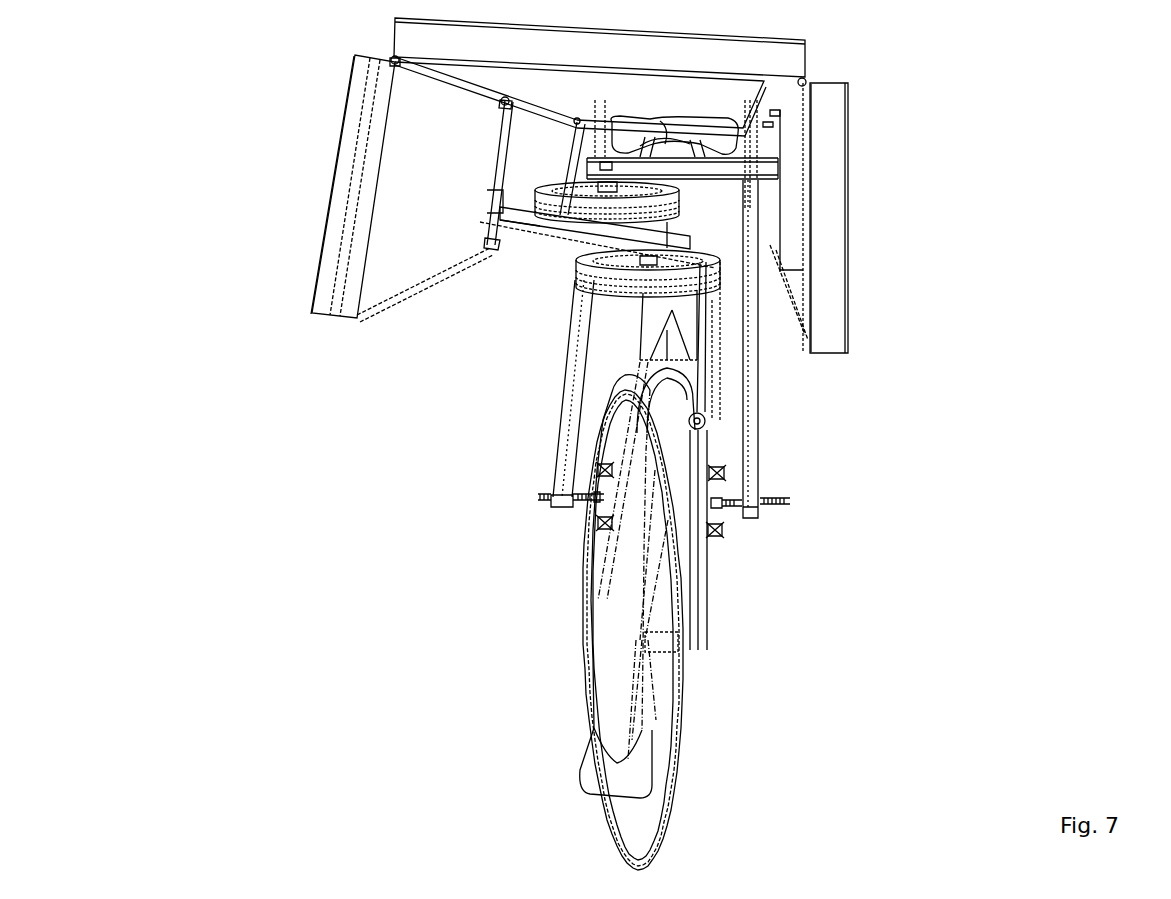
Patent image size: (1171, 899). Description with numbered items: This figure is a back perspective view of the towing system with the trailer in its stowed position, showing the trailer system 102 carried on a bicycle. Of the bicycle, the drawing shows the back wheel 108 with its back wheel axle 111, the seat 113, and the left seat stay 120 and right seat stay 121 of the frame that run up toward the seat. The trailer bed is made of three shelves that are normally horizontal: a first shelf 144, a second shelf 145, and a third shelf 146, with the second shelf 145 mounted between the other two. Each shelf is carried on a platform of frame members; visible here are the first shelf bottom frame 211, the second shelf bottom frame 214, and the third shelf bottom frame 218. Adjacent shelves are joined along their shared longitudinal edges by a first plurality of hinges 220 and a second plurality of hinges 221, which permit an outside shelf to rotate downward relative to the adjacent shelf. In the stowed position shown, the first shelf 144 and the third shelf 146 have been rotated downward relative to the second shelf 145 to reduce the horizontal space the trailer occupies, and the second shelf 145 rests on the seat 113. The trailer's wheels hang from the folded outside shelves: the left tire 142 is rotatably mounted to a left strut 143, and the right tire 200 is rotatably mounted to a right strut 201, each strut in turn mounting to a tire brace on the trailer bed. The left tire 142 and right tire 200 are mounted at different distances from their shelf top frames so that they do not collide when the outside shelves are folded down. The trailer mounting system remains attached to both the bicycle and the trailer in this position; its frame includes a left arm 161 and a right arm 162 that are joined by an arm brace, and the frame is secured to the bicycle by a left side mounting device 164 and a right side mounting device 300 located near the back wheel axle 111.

The trailer system 102 is at (330, 193).
The back wheel 108 is at (667, 778).
The back wheel axle 111 is at (665, 642).
The seat 113 is at (742, 137).
The left seat stay 120 is at (600, 587).
The right seat stay 121 is at (703, 608).
The left tire 142 is at (587, 270).
The left strut 143 is at (570, 238).
The first shelf 144 is at (850, 222).
The second shelf 145 is at (593, 104).
The third shelf 146 is at (416, 187).
The left arm 161 is at (573, 423).
The right arm 162 is at (752, 463).
The left side mounting device 164 is at (537, 497).
The right tire 200 is at (570, 208).
The right strut 201 is at (755, 168).
The first shelf bottom frame 211 is at (830, 337).
The second shelf bottom frame 214 is at (661, 64).
The third shelf bottom frame 218 is at (328, 287).
The first plurality of hinges 220 is at (768, 124).
The second plurality of hinges 221 is at (577, 121).
The right side mounting device 300 is at (778, 502).